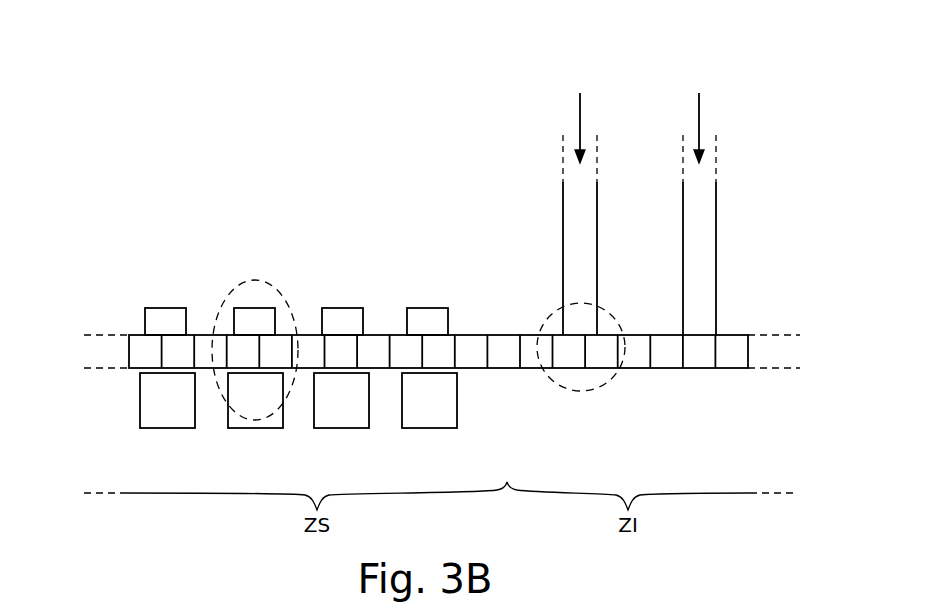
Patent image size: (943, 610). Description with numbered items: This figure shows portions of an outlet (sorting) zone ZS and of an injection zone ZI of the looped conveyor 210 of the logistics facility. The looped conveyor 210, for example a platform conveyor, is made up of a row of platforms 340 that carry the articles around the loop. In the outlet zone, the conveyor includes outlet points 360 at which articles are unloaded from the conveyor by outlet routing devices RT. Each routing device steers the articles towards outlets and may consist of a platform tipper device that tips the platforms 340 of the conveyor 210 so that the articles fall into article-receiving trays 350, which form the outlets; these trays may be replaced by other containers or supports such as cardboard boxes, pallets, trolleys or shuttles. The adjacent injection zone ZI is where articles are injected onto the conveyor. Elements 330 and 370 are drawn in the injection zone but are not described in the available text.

The looped conveyor 210 is at (743, 371).
The inspection pins 330 is at (563, 196).
The platforms 340 is at (505, 334).
The article-receiving trays 350 is at (283, 422).
The outlet points 360 is at (258, 282).
The inspection zone 370 is at (610, 379).